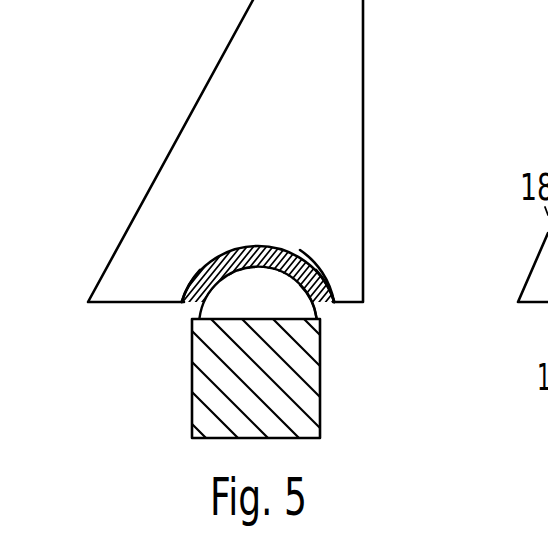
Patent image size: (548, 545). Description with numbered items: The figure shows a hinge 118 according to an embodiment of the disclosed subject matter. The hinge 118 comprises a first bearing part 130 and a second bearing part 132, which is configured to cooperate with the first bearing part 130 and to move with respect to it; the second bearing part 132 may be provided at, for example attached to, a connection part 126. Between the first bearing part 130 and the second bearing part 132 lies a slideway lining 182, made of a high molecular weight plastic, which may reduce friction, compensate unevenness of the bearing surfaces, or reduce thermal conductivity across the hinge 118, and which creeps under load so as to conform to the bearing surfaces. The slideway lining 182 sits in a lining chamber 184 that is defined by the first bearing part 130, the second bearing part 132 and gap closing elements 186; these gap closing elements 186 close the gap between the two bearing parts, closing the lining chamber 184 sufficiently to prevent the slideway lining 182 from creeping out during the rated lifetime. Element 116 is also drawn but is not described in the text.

The base / substrate block 116 is at (314, 411).
The hinge 118 is at (152, 347).
The connection part 126 is at (352, 100).
The first bearing part 130 is at (316, 309).
The second bearing part 132 is at (194, 303).
The slideway lining 182 is at (314, 270).
The lining chamber 184 is at (237, 249).
The gap closing elements 186 is at (186, 306).